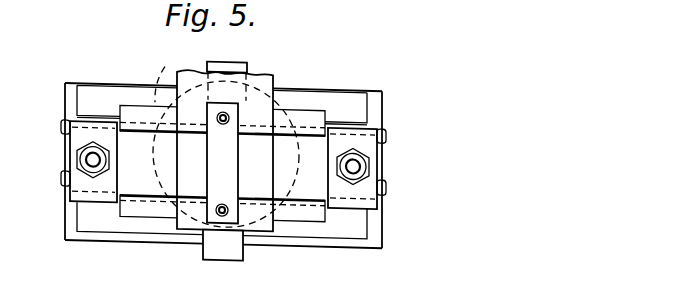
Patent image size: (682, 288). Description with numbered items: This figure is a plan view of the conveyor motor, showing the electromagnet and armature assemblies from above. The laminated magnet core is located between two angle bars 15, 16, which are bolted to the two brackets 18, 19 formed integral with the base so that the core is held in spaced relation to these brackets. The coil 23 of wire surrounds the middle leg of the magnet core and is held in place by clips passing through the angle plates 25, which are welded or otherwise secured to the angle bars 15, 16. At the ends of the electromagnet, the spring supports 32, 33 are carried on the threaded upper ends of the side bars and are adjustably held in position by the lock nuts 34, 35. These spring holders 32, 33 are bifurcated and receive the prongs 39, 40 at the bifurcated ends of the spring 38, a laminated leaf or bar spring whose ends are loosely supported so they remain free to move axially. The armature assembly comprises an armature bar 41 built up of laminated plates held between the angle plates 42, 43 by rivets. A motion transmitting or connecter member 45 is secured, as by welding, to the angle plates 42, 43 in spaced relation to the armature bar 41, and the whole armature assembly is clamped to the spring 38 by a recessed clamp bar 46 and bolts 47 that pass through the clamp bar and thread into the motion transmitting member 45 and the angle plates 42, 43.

The angle bar 15 is at (350, 232).
The angle bar 16 is at (356, 98).
The bracket 18 is at (379, 235).
The bracket 19 is at (66, 91).
The coil 23 is at (226, 139).
The angle plate 25 is at (230, 63).
The spring support 32 is at (75, 134).
The spring support 33 is at (371, 187).
The lock nut 34 is at (76, 163).
The lock nut 35 is at (381, 162).
The spring 38 is at (305, 143).
The prong 39 is at (63, 128).
The prong 40 is at (62, 181).
The armature bar 41 is at (293, 128).
The angle plate 42 is at (132, 217).
The angle plate 43 is at (134, 107).
The motion transmitting member 45 is at (196, 72).
The clamp bar 46 is at (250, 222).
The bolt 47 is at (226, 115).